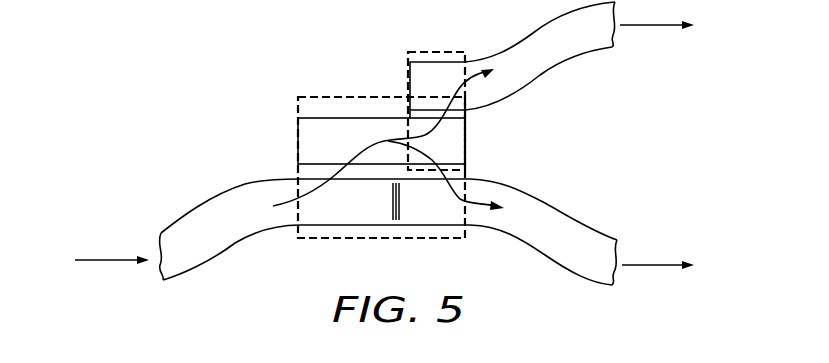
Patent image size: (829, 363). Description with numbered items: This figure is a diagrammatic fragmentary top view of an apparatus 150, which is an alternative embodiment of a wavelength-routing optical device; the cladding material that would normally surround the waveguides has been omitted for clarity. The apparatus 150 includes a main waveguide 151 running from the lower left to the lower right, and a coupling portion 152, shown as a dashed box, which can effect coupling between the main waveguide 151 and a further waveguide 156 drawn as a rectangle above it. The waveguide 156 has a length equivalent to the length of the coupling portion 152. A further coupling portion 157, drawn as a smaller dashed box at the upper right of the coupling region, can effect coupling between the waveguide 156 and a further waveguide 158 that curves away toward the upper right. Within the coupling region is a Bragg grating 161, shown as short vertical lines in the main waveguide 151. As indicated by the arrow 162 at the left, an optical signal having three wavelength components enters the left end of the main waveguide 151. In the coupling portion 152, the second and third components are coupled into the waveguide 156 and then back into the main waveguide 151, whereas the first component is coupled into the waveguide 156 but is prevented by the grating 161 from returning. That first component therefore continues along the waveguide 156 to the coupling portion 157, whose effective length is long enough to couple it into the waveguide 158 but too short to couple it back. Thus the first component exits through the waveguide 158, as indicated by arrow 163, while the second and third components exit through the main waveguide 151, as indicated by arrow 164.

The apparatus 150 is at (279, 59).
The main waveguide 151 is at (560, 258).
The coupling portion 152 is at (360, 97).
The further waveguide 156 is at (298, 130).
The further coupling portion 157 is at (442, 51).
The further waveguide 158 is at (543, 74).
The Bragg grating 161 is at (391, 200).
The arrow 162 is at (112, 262).
The arrow 163 is at (657, 28).
The arrow 164 is at (657, 267).